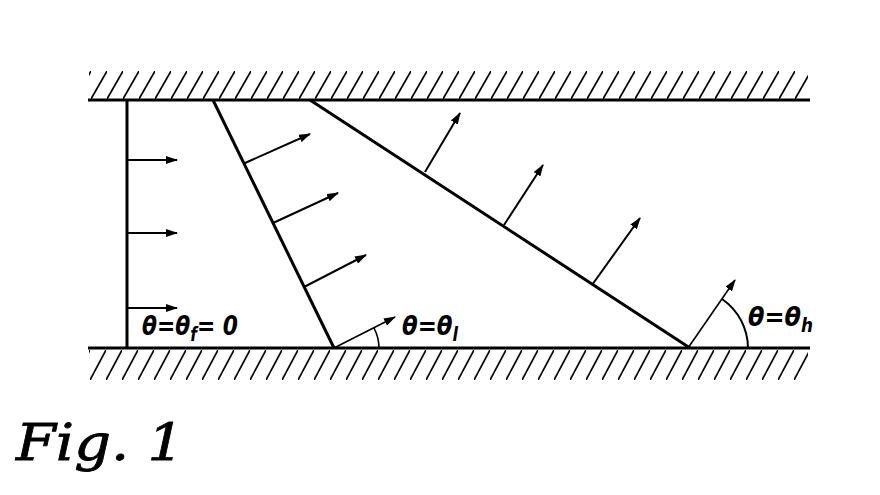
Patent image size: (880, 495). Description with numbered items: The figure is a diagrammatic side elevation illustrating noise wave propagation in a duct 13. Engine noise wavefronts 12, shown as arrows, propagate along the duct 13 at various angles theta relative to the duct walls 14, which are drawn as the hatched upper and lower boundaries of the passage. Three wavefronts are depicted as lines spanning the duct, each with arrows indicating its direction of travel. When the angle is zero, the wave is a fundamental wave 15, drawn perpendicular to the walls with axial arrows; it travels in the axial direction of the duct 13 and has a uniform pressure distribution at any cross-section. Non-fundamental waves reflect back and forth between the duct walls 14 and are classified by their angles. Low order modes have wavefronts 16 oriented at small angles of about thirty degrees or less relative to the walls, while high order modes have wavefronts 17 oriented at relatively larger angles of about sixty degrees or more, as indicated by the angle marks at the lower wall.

The engine noise wavefronts 12 is at (97, 212).
The duct 13 is at (708, 175).
The duct walls 14 is at (622, 100).
The fundamental wave 15 is at (127, 133).
The low order mode wavefronts 16 is at (231, 137).
The high order mode wavefronts 17 is at (375, 142).